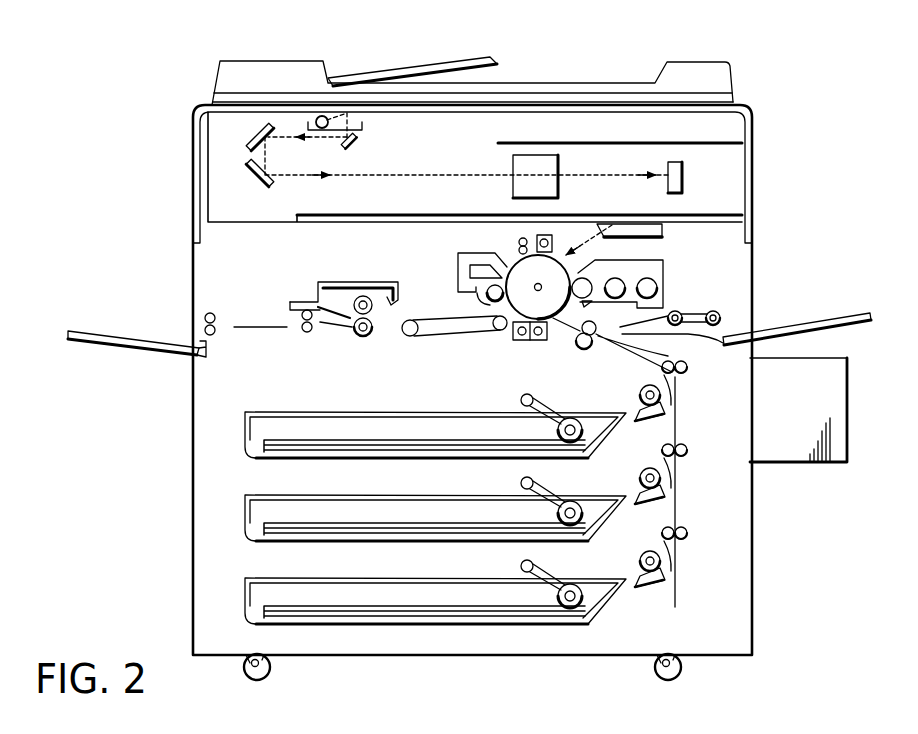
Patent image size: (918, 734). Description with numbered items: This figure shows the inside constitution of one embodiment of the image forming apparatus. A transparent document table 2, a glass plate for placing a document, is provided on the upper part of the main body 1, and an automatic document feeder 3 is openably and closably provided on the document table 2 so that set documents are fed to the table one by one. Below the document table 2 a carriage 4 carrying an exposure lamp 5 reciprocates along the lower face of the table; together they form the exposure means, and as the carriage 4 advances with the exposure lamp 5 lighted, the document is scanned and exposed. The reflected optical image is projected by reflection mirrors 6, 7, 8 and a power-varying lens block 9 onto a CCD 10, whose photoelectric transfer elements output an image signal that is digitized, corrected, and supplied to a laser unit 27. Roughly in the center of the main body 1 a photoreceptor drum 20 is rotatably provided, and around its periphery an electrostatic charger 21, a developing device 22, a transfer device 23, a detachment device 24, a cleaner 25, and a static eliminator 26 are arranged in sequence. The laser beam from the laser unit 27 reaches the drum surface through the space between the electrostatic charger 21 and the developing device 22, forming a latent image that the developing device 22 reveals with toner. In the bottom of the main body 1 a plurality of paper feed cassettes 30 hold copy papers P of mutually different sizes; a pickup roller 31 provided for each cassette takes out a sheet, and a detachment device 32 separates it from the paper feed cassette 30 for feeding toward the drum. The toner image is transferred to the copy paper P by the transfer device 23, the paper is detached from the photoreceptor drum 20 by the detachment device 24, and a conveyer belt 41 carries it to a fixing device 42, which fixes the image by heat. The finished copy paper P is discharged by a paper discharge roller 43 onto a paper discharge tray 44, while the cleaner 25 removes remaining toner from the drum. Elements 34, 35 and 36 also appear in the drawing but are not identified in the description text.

The main body 1 is at (752, 181).
The document table 2 is at (494, 118).
The automatic document feeder 3 is at (592, 83).
The carriage 4 is at (365, 130).
The exposure lamp 5 is at (322, 116).
The reflection mirror 6 is at (356, 146).
The reflection mirror 7 is at (250, 134).
The reflection mirror 8 is at (247, 170).
The lens block 9 is at (558, 165).
The CCD 10 is at (683, 182).
The photoreceptor drum 20 is at (511, 263).
The electrostatic charger 21 is at (555, 233).
The developing device 22 is at (651, 262).
The transfer device 23 is at (538, 340).
The detachment device 24 is at (518, 340).
The cleaner 25 is at (456, 271).
The static eliminator 26 is at (521, 235).
The laser unit 27 is at (665, 230).
The paper feed cassette 30 is at (246, 416).
The pickup roller 31 is at (581, 420).
The detachment device 32 is at (645, 388).
The manual feed tray 34 is at (843, 316).
The feed roller 35 is at (714, 311).
The feed roller 36 is at (678, 312).
The conveyer belt 41 is at (440, 318).
The fixing device 42 is at (352, 282).
The paper discharge roller 43 is at (212, 312).
The paper discharge tray 44 is at (147, 352).
The copy paper P is at (384, 440).